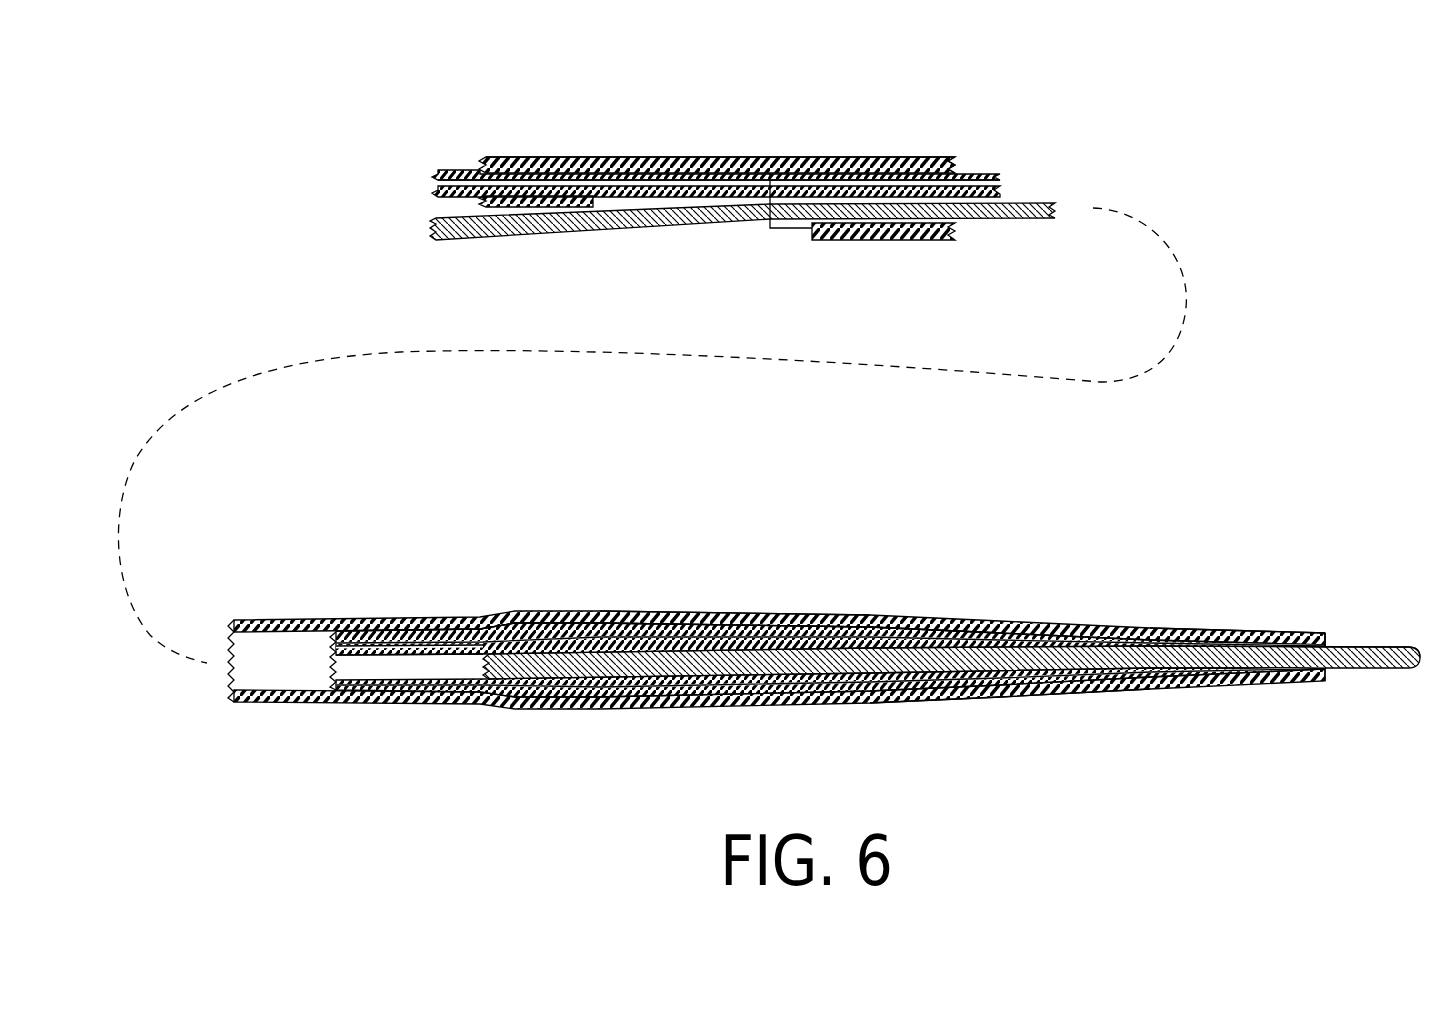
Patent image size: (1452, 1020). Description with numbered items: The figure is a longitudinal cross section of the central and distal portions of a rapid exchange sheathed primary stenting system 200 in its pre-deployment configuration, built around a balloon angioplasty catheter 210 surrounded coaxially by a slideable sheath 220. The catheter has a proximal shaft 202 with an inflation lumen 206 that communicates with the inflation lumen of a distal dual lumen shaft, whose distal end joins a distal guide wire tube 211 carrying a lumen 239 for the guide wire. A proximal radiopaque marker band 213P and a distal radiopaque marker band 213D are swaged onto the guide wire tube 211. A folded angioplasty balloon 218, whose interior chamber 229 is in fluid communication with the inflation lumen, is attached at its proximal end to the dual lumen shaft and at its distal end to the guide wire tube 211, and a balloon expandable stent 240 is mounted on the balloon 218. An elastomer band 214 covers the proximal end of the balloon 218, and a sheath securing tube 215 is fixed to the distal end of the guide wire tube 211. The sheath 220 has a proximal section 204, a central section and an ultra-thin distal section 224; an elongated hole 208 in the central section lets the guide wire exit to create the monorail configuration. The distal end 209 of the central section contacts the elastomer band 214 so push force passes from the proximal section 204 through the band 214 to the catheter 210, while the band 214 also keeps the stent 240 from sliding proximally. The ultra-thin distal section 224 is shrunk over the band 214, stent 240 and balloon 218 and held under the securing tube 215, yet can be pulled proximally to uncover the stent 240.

The rapid exchange sheathed primary stenting system 200 is at (1302, 226).
The proximal section 204 is at (528, 157).
The proximal shaft 202 is at (455, 170).
The inflation lumen 206 is at (450, 178).
The elongated hole 208 is at (790, 240).
The slideable sheath 220 is at (226, 610).
The distal end 209 is at (400, 622).
The elastomer band 214 is at (418, 620).
The proximal radiopaque marker band 213P is at (628, 625).
The distal radiopaque marker band 213D is at (990, 628).
The interior chamber 229 is at (711, 614).
The angioplasty balloon 218 is at (758, 626).
The sheath securing tube 215 is at (1291, 637).
The distal guide wire tube 211 is at (1330, 645).
The lumen 239 is at (1330, 646).
The balloon angioplasty catheter 210 is at (1335, 678).
The stent 240 is at (617, 708).
The ultra-thin distal section 224 is at (1005, 697).